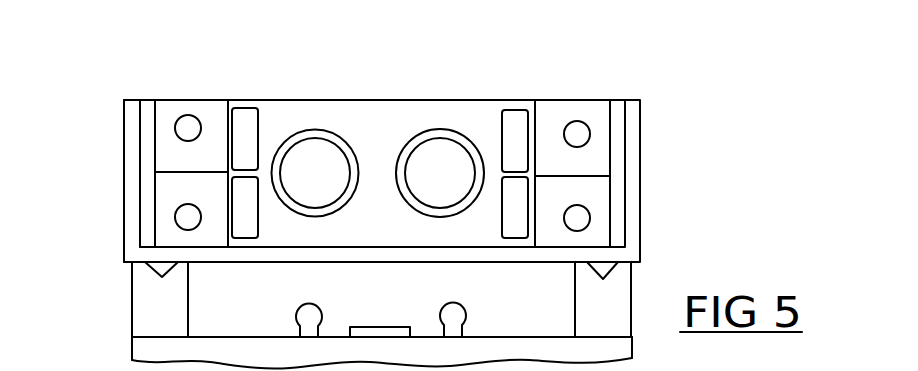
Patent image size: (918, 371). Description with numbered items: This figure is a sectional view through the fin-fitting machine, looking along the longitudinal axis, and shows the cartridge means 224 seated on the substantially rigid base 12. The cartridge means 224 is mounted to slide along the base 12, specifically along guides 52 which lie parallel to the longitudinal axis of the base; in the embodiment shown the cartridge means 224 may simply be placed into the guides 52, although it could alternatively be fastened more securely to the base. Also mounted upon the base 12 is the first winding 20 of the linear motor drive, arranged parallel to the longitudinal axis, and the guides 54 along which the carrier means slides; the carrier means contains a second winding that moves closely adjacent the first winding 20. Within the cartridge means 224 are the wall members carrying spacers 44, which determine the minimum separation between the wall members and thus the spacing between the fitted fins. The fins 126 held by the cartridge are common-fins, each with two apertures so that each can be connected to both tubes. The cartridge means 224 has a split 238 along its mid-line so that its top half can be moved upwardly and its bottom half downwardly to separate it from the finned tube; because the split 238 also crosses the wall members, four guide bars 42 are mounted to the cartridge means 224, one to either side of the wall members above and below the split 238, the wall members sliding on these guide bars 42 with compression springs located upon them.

The base 12 is at (137, 343).
The first winding 20 is at (383, 327).
The guide bars 42 is at (187, 125).
The spacers 44 is at (519, 117).
The guides 52 is at (135, 275).
The guides 54 is at (300, 307).
The fin 126 is at (312, 112).
The cartridge means 224 is at (698, 134).
The split 238 is at (134, 177).